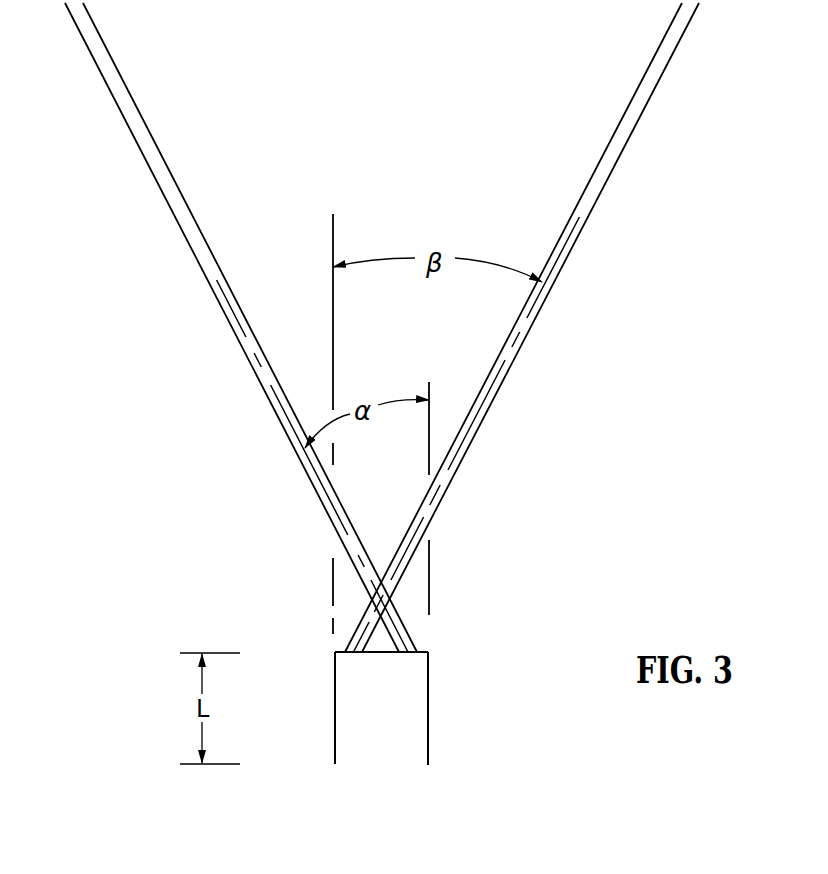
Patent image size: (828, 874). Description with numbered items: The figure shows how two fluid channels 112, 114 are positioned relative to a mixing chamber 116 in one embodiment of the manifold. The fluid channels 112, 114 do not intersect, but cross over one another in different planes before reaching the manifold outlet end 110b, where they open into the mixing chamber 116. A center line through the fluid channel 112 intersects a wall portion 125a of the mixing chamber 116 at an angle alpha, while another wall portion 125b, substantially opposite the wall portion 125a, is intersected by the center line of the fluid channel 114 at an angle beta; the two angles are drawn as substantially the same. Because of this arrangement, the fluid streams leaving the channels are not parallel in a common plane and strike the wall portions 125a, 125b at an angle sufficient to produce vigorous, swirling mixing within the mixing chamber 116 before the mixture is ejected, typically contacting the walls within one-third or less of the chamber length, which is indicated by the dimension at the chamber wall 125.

The fluid channel 112 is at (168, 155).
The fluid channel 114 is at (605, 193).
The mixing chamber 116 is at (402, 729).
The manifold outlet end 110b is at (428, 651).
The wall portion 125a is at (430, 666).
The wall portion 125b is at (333, 684).
The fiber end region 125 is at (427, 753).